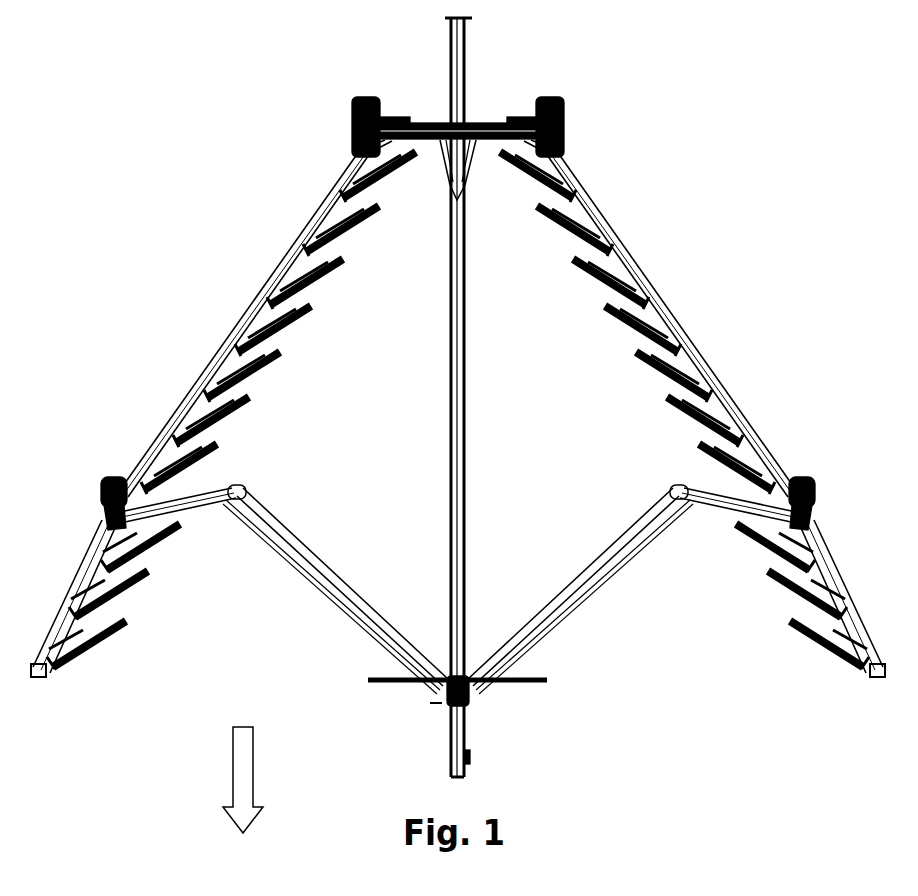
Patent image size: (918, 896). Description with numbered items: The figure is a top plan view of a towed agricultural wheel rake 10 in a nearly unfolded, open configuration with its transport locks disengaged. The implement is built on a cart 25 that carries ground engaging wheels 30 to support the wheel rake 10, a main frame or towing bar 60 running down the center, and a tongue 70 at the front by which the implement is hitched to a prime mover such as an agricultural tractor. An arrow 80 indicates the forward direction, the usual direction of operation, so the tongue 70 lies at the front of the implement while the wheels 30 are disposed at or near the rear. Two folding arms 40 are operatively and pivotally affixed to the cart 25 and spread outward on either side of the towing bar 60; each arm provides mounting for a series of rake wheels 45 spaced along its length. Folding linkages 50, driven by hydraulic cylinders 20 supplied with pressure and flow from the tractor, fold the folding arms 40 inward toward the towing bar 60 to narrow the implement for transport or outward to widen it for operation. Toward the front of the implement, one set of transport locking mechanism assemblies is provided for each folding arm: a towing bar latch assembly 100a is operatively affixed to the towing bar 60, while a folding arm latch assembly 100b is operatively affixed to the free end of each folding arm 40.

The wheel rake 10 is at (655, 165).
The hydraulic cylinder 20 is at (253, 545).
The cart 25 is at (482, 102).
The ground engaging wheel 30 is at (355, 116).
The folding arm 40 is at (217, 352).
The rake wheel 45 is at (280, 350).
The folding linkage 50 is at (325, 533).
The towing bar 60 is at (450, 400).
The tongue 70 is at (452, 770).
The forward direction arrow 80 is at (232, 757).
The towing bar latch assembly 100a is at (385, 686).
The folding arm latch assembly 100b is at (38, 680).